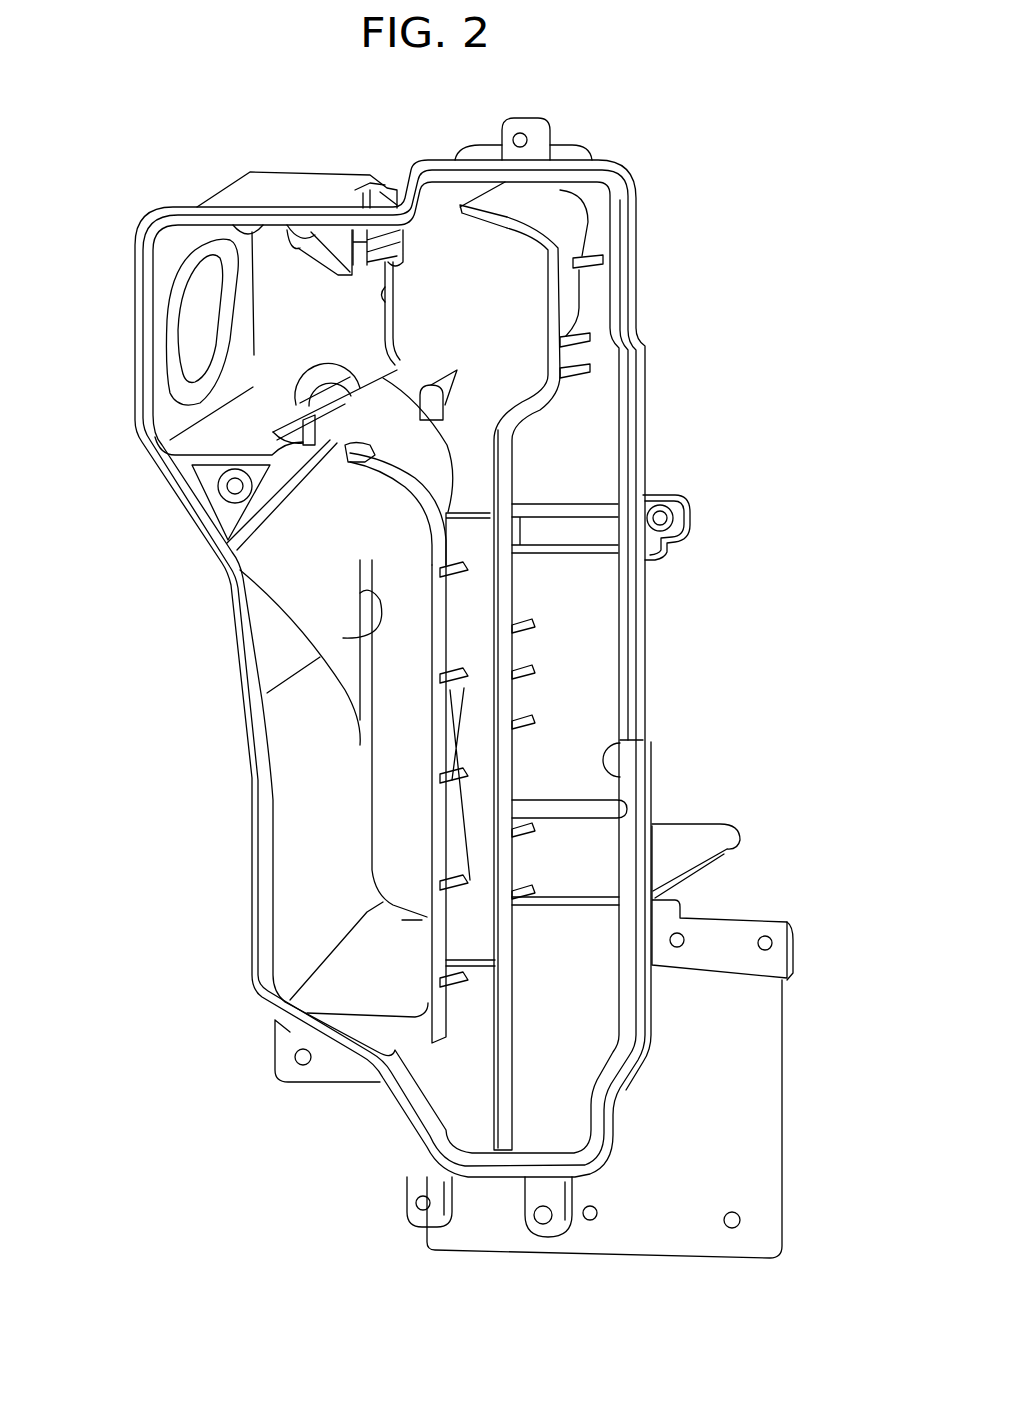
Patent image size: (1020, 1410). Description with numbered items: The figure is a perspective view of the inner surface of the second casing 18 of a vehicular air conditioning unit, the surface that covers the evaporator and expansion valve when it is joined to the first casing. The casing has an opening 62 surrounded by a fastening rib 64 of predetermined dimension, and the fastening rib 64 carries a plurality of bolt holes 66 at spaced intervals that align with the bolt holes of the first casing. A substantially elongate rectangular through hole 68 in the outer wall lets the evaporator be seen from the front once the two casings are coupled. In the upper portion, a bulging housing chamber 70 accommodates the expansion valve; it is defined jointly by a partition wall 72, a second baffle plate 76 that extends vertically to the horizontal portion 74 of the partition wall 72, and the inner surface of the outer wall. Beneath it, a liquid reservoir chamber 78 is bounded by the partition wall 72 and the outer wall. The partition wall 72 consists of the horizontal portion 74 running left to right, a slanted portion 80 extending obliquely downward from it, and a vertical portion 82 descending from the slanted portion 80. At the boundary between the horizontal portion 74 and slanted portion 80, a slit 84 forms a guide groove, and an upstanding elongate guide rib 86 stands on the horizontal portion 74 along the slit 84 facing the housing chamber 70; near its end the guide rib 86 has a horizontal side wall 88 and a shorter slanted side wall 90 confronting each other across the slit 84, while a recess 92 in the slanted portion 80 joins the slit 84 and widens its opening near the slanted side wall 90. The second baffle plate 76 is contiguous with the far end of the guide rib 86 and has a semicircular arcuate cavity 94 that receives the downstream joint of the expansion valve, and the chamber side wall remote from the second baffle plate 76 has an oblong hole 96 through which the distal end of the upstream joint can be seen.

The second casing 18 is at (268, 98).
The opening 62 is at (643, 740).
The fastening rib 64 is at (620, 293).
The bolt holes 66 is at (522, 140).
The through hole 68 is at (343, 638).
The housing chamber 70 is at (248, 215).
The partition wall 72 is at (101, 474).
The horizontal portion 74 is at (202, 442).
The second baffle plate 76 is at (392, 243).
The liquid reservoir chamber 78 is at (318, 742).
The slanted portion 80 is at (300, 517).
The vertical portion 82 is at (437, 527).
The slit 84 is at (334, 370).
The guide rib 86 is at (392, 370).
The horizontal side wall 88 is at (297, 398).
The slanted side wall 90 is at (420, 401).
The recess 92 is at (348, 452).
The arcuate cavity 94 is at (397, 290).
The oblong hole 96 is at (178, 292).